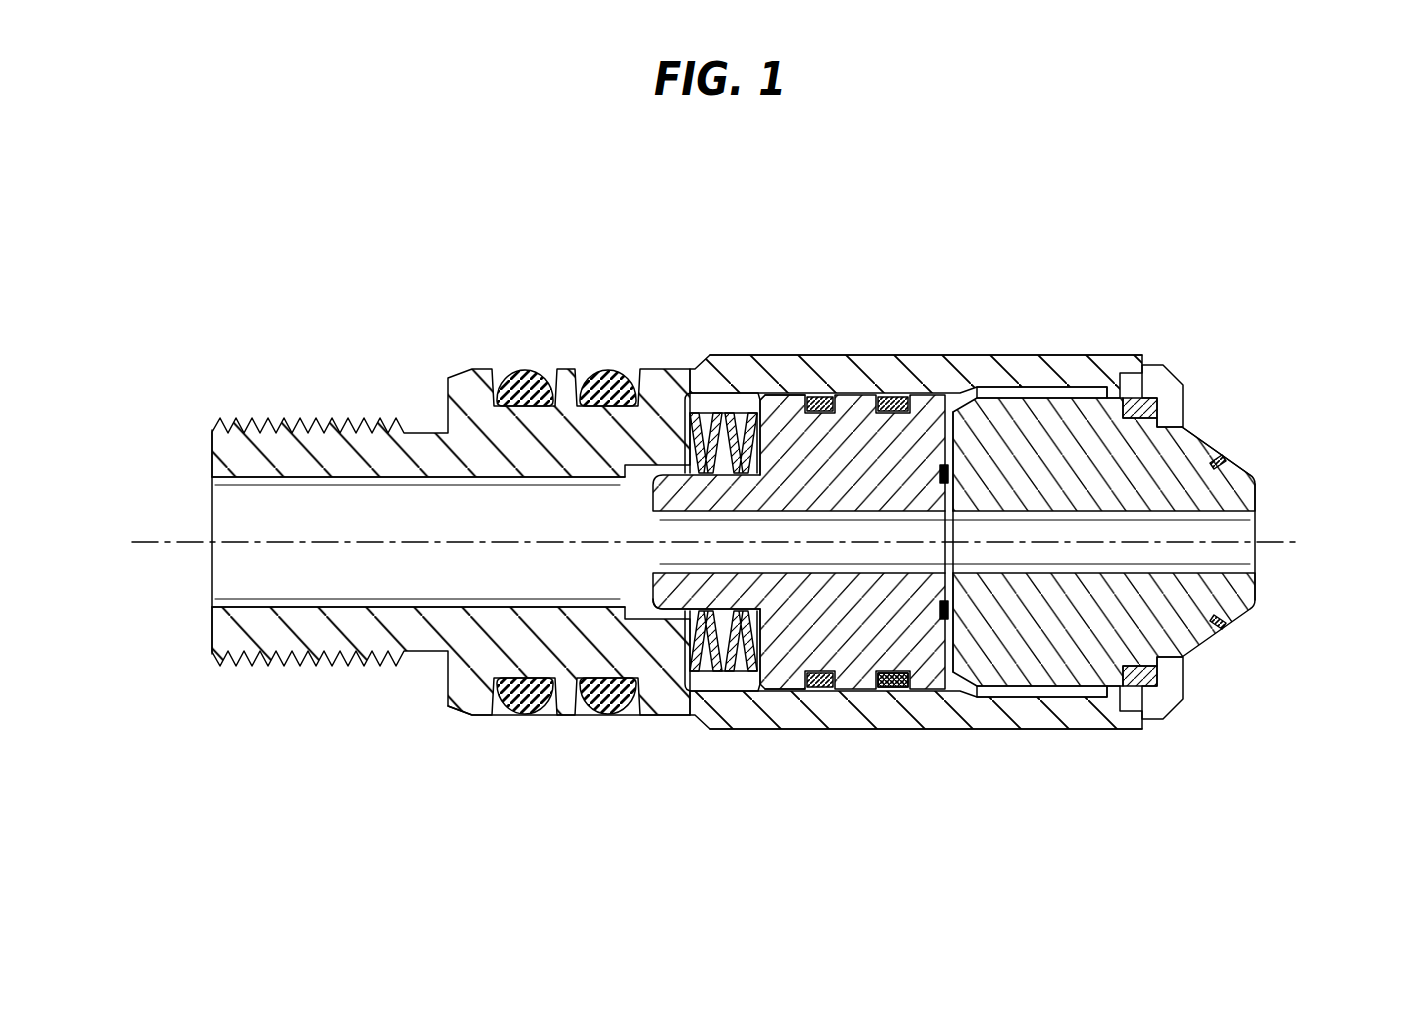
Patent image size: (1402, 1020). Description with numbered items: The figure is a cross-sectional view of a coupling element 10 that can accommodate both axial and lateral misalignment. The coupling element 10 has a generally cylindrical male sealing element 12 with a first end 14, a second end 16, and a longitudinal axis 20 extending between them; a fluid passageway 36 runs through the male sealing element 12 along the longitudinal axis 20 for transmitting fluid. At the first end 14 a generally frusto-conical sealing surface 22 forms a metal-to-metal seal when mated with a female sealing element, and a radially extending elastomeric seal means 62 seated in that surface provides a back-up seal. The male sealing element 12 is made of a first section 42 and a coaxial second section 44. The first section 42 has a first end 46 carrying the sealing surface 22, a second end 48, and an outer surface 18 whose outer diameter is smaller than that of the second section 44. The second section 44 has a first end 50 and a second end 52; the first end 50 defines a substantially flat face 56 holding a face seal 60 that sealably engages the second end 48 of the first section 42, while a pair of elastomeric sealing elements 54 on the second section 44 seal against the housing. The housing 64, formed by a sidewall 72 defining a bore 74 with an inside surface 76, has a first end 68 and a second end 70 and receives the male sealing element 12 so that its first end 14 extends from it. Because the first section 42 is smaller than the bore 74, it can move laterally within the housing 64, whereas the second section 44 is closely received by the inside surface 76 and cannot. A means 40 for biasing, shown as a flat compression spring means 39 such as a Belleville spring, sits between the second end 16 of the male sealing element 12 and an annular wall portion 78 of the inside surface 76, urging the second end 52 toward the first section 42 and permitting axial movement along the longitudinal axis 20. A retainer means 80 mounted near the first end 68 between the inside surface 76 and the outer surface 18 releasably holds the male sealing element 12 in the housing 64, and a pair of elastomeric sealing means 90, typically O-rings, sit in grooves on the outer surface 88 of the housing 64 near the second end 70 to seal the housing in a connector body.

The coupling element 10 is at (396, 260).
The male sealing element 12 is at (1100, 700).
The first end 14 is at (1260, 580).
The second end 16 is at (665, 607).
The outer surface 18 is at (1040, 695).
The longitudinal axis 20 is at (157, 542).
The generally frusto-conical sealing surface 22 is at (1216, 452).
The fluid passageway 36 is at (350, 565).
The flat compression spring means 39 is at (735, 400).
The means for biasing 40 is at (708, 400).
The first section 42 is at (1196, 634).
The second section 44 is at (805, 395).
The first end 46 is at (1262, 498).
The second end 48 is at (947, 625).
The first end 50 is at (951, 400).
The second end 52 is at (650, 592).
The pair of elastomeric sealing elements 54 is at (870, 696).
The substantially flat face 56 is at (905, 690).
The face seal 60 is at (941, 466).
The radially extending elastomeric seal means 62 is at (1224, 456).
The housing 64 is at (878, 355).
The first end 68 is at (1140, 720).
The second end 70 is at (212, 447).
The sidewall 72 is at (998, 729).
The bore 74 is at (1080, 396).
The inside surface 76 is at (1032, 392).
The annular wall portion 78 is at (710, 700).
The retainer means 80 is at (1155, 400).
The outer surface 88 is at (458, 712).
The pair of elastomeric sealing means 90 is at (600, 372).